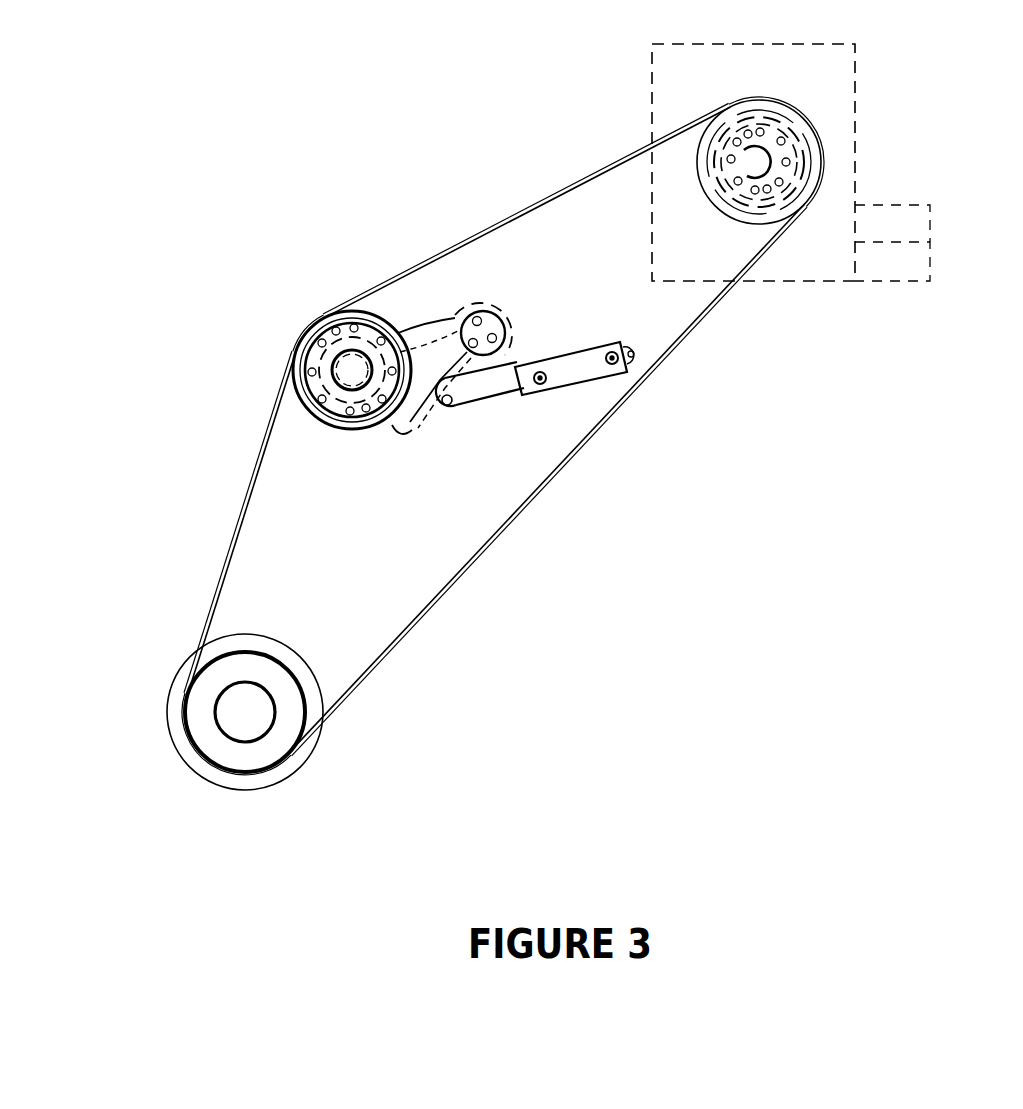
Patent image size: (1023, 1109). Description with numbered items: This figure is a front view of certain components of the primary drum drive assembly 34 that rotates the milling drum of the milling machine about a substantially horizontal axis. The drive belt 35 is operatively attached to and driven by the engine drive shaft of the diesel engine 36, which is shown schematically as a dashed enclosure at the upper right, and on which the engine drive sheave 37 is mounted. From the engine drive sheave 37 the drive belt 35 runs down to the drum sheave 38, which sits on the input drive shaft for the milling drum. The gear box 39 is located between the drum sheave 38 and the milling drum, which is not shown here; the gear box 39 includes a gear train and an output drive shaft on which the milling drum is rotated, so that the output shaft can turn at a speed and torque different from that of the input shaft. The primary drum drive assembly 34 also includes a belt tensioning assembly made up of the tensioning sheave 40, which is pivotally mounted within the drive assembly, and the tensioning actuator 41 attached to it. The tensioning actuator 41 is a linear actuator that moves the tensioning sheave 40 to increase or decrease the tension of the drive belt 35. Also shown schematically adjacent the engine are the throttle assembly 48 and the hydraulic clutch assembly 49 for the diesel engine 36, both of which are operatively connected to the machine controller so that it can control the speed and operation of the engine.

The primary drum drive assembly 34 is at (383, 194).
The drive belt 35 is at (505, 218).
The diesel engine 36 is at (858, 79).
The engine drive sheave 37 is at (822, 147).
The drum sheave 38 is at (277, 658).
The gear box 39 is at (250, 635).
The tensioning sheave 40 is at (385, 315).
The tensioning actuator 41 is at (548, 360).
The throttle assembly 48 is at (931, 211).
The hydraulic clutch assembly 49 is at (933, 264).